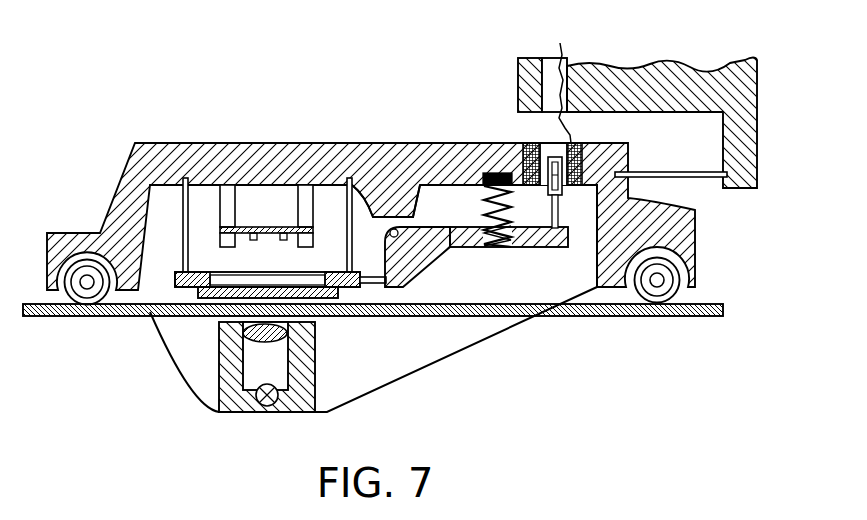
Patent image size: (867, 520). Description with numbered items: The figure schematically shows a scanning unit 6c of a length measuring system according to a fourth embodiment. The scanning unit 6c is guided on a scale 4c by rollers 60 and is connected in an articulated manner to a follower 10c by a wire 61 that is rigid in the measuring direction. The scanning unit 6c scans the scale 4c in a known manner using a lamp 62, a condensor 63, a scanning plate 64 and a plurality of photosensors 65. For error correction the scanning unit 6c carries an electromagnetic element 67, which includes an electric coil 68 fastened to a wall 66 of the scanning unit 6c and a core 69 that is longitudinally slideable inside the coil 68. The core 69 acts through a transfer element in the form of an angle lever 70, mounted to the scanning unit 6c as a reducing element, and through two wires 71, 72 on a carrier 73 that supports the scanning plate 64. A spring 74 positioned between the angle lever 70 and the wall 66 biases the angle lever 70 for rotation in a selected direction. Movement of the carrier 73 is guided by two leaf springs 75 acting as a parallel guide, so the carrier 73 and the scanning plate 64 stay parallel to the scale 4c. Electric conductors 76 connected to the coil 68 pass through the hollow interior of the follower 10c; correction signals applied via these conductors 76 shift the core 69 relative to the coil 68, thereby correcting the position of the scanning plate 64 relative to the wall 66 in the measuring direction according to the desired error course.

The scale 4c is at (685, 317).
The scanning unit 6c is at (137, 172).
The follower 10c is at (624, 87).
The rollers 60 is at (84, 296).
The wire 61 is at (703, 178).
The lamp 62 is at (241, 413).
The condensor 63 is at (253, 337).
The scanning plate 64 is at (205, 297).
The photosensors 65 is at (254, 228).
The wall 66 is at (380, 200).
The electromagnetic element 67 is at (534, 129).
The electric coil 68 is at (533, 135).
The core 69 is at (571, 188).
The angle lever 70 is at (423, 250).
The wire 71 is at (553, 228).
The wire 72 is at (373, 284).
The carrier 73 is at (337, 272).
The spring 74 is at (500, 247).
The leaf springs 75 is at (180, 203).
The electric conductors 76 is at (560, 43).